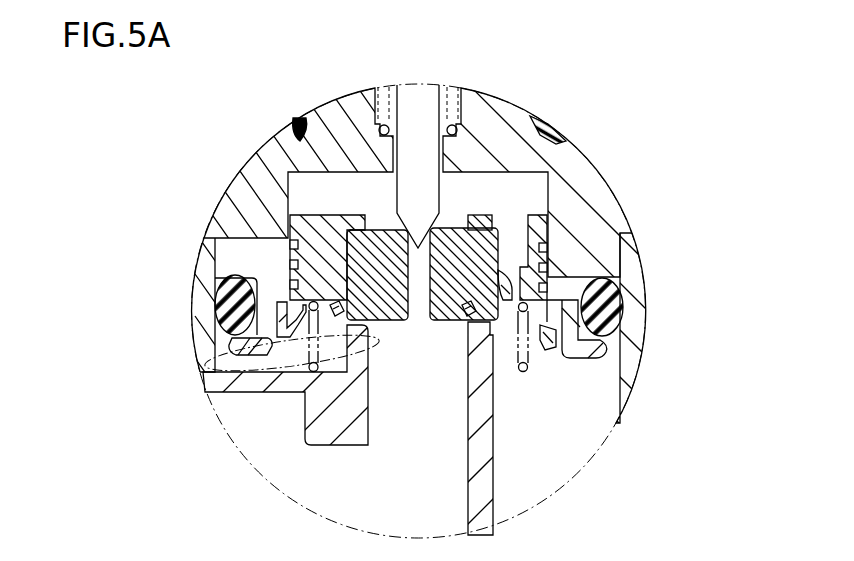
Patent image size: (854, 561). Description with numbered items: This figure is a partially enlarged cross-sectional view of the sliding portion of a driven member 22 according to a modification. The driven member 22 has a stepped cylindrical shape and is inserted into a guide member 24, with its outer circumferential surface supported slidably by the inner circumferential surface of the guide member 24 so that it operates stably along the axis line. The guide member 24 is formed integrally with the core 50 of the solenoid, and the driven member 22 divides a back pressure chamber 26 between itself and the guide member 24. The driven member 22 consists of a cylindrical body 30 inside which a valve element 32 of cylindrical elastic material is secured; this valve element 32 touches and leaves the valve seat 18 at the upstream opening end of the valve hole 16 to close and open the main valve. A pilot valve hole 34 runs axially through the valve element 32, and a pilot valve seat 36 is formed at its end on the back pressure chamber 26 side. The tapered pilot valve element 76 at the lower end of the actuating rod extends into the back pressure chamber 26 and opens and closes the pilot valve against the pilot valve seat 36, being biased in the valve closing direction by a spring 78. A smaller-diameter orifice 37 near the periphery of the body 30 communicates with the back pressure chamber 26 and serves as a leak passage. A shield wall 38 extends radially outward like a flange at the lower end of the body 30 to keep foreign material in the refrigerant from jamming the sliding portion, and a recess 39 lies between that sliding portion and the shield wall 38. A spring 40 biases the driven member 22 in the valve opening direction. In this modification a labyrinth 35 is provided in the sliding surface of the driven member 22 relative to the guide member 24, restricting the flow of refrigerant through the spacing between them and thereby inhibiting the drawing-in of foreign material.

The valve hole 16 is at (207, 366).
The valve seat 18 is at (213, 288).
The driven member 22 is at (105, 196).
The guide member 24 is at (263, 177).
The back pressure chamber 26 is at (297, 120).
The body 30 is at (293, 226).
The valve element 32 is at (347, 268).
The pilot valve hole 34 is at (484, 227).
The labyrinth 35 is at (543, 268).
The pilot valve seat 36 is at (437, 219).
The orifice 37 is at (623, 309).
The shield wall 38 is at (245, 346).
The recess 39 is at (226, 311).
The spring 40 is at (606, 346).
The core 50 is at (337, 100).
The pilot valve element 76 is at (438, 193).
The spring 78 is at (465, 95).